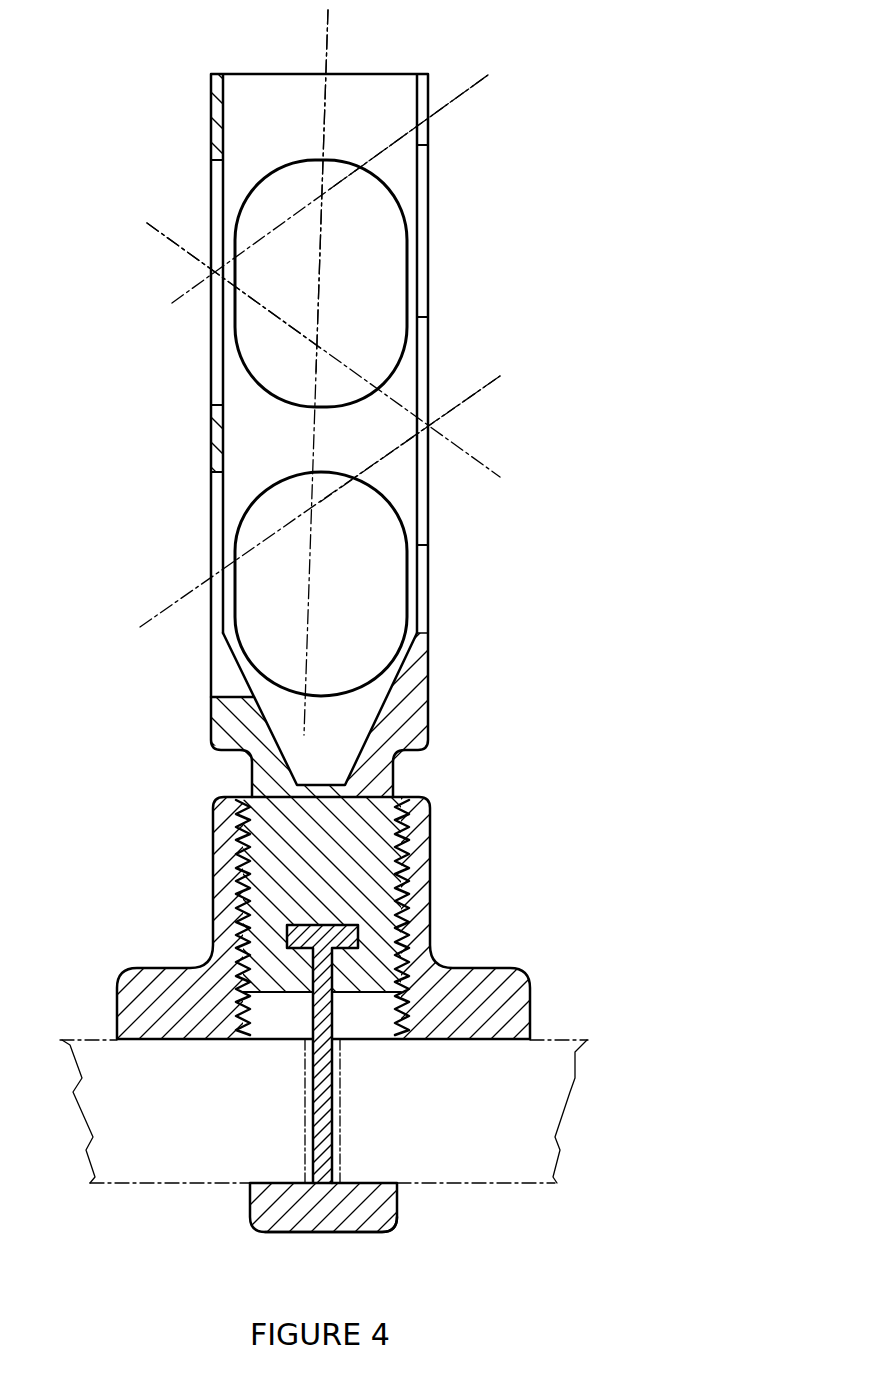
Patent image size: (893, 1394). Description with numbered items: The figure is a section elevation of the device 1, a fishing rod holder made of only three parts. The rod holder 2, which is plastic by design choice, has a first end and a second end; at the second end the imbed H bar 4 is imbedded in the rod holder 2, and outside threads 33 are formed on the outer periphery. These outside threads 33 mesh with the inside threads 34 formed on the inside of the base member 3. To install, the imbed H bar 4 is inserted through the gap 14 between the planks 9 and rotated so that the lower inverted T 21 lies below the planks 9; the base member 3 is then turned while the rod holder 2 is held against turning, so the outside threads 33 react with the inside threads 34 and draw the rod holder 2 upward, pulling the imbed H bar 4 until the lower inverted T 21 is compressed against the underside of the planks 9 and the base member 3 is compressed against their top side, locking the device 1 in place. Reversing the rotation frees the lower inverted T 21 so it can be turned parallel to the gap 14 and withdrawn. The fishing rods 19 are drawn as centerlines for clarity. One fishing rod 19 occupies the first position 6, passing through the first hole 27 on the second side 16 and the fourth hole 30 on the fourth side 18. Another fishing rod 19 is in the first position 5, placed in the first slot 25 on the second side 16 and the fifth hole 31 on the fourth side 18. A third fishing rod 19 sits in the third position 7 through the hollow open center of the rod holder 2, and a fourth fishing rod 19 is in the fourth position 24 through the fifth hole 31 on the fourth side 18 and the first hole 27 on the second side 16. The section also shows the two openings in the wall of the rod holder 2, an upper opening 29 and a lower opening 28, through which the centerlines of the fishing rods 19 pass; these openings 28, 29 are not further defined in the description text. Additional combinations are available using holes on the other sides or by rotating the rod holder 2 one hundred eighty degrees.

The device 1 is at (211, 383).
The rod holder 2 is at (211, 503).
The base member 3 is at (213, 832).
The imbed H bar 4 is at (255, 1230).
The first position 5 is at (453, 100).
The first position 6 is at (482, 388).
The third position 7 is at (323, 22).
The planks 9 is at (123, 1183).
The gap 14 is at (342, 1127).
The second side 16 is at (430, 215).
The fourth side 18 is at (211, 425).
The fishing rod 19 is at (328, 35).
The lower inverted T 21 is at (385, 1230).
The fourth position 24 is at (158, 230).
The first slot 25 is at (430, 90).
The first hole 27 is at (430, 530).
The lower opening 28 is at (407, 525).
The upper opening 29 is at (407, 343).
The fourth hole 30 is at (211, 552).
The fifth hole 31 is at (211, 325).
The outside threads 33 is at (245, 895).
The inside threads 34 is at (400, 1015).